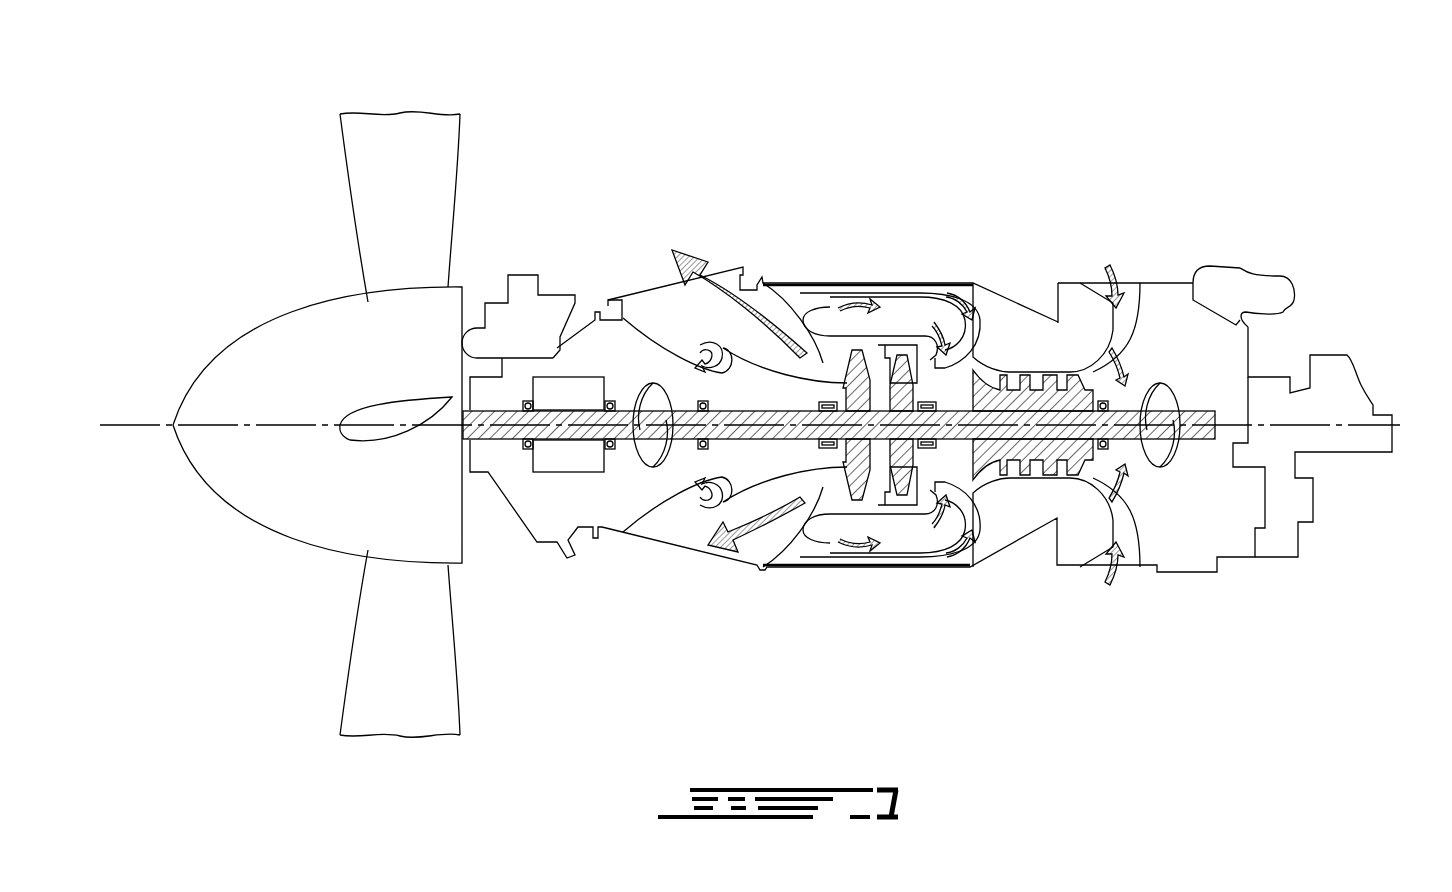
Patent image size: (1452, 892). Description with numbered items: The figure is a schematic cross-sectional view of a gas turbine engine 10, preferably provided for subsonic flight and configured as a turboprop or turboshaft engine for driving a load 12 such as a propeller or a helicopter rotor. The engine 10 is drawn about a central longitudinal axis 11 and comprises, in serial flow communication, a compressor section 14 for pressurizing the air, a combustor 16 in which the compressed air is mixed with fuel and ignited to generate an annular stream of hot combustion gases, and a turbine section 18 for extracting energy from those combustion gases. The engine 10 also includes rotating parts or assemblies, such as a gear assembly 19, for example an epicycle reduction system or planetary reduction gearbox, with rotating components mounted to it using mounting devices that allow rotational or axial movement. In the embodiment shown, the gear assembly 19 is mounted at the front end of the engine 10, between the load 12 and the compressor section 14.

The gas turbine engine 10 is at (1262, 171).
The central longitudinal axis 11 is at (147, 424).
The load 12 is at (355, 628).
The compressor section 14 is at (1055, 322).
The combustor 16 is at (900, 318).
The turbine section 18 is at (870, 338).
The gear assembly 19 is at (568, 377).